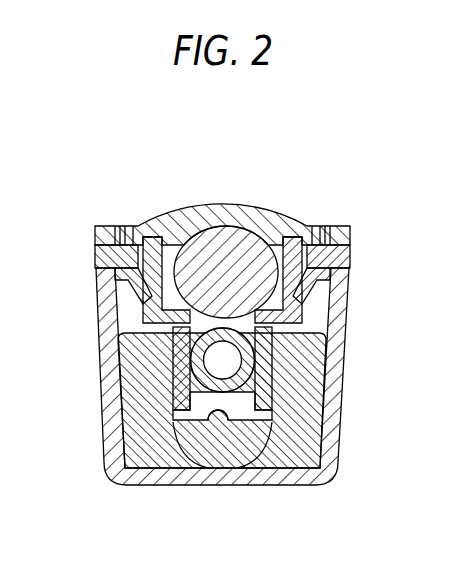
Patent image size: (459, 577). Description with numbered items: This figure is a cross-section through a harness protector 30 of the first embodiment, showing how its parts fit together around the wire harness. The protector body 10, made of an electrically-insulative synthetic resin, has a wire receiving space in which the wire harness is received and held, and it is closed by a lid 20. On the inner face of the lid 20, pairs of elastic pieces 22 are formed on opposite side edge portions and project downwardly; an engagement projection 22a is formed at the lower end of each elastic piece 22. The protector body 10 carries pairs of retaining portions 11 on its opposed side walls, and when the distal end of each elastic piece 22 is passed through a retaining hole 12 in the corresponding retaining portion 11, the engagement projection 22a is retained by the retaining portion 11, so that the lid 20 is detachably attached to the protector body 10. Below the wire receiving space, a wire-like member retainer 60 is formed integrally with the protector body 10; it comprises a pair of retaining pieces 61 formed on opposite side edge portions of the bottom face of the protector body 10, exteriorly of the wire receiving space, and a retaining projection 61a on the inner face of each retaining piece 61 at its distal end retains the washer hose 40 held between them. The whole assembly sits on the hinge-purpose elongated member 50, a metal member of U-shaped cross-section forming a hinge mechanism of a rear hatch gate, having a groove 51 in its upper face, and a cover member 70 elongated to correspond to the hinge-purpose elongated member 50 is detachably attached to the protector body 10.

The protector body 10 is at (174, 255).
The retaining portion 11 is at (118, 229).
The retaining hole 12 is at (137, 233).
The lid 20 is at (233, 212).
The elastic piece 22 is at (102, 265).
The engagement projection 22a is at (118, 284).
The harness protector 30 is at (228, 223).
The washer hose 40 is at (330, 318).
The hinge-purpose elongated member 50 is at (330, 420).
The groove 51 is at (203, 469).
The wire-like member retainer 60 is at (158, 355).
The retaining piece 61 is at (178, 372).
The retaining projection 61a is at (165, 469).
The cover member 70 is at (99, 425).